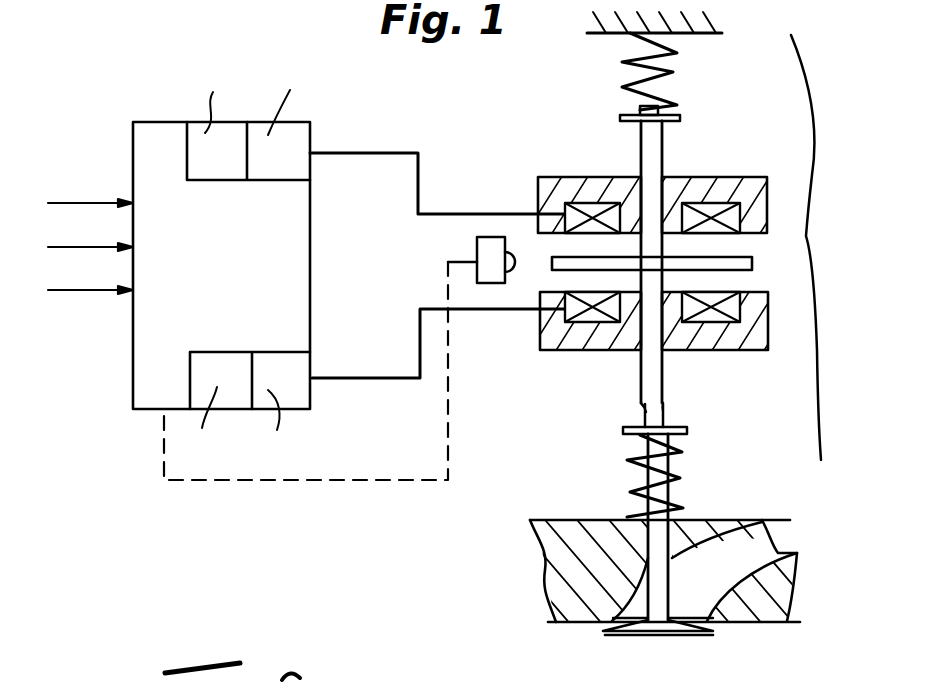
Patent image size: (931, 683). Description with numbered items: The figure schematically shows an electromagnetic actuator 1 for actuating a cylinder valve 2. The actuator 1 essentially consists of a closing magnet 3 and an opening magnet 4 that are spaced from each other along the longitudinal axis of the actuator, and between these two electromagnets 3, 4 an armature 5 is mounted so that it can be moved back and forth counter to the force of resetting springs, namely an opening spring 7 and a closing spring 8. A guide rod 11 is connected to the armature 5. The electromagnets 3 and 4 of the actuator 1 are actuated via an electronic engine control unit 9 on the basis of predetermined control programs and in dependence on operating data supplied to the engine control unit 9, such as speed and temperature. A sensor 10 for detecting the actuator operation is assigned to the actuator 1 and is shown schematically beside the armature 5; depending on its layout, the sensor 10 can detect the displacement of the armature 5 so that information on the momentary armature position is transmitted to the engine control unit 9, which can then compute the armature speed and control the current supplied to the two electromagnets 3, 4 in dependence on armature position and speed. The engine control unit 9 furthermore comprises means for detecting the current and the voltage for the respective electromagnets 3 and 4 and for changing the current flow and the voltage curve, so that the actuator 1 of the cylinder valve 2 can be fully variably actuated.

The electromagnetic actuator 1 is at (822, 247).
The cylinder valve 2 is at (660, 612).
The closing magnet 3 is at (765, 200).
The opening magnet 4 is at (745, 336).
The armature 5 is at (752, 262).
The opening spring 7 is at (672, 75).
The closing spring 8 is at (683, 475).
The engine control unit 9 is at (150, 137).
The sensor 10 is at (483, 237).
The guide rod 11 is at (635, 148).